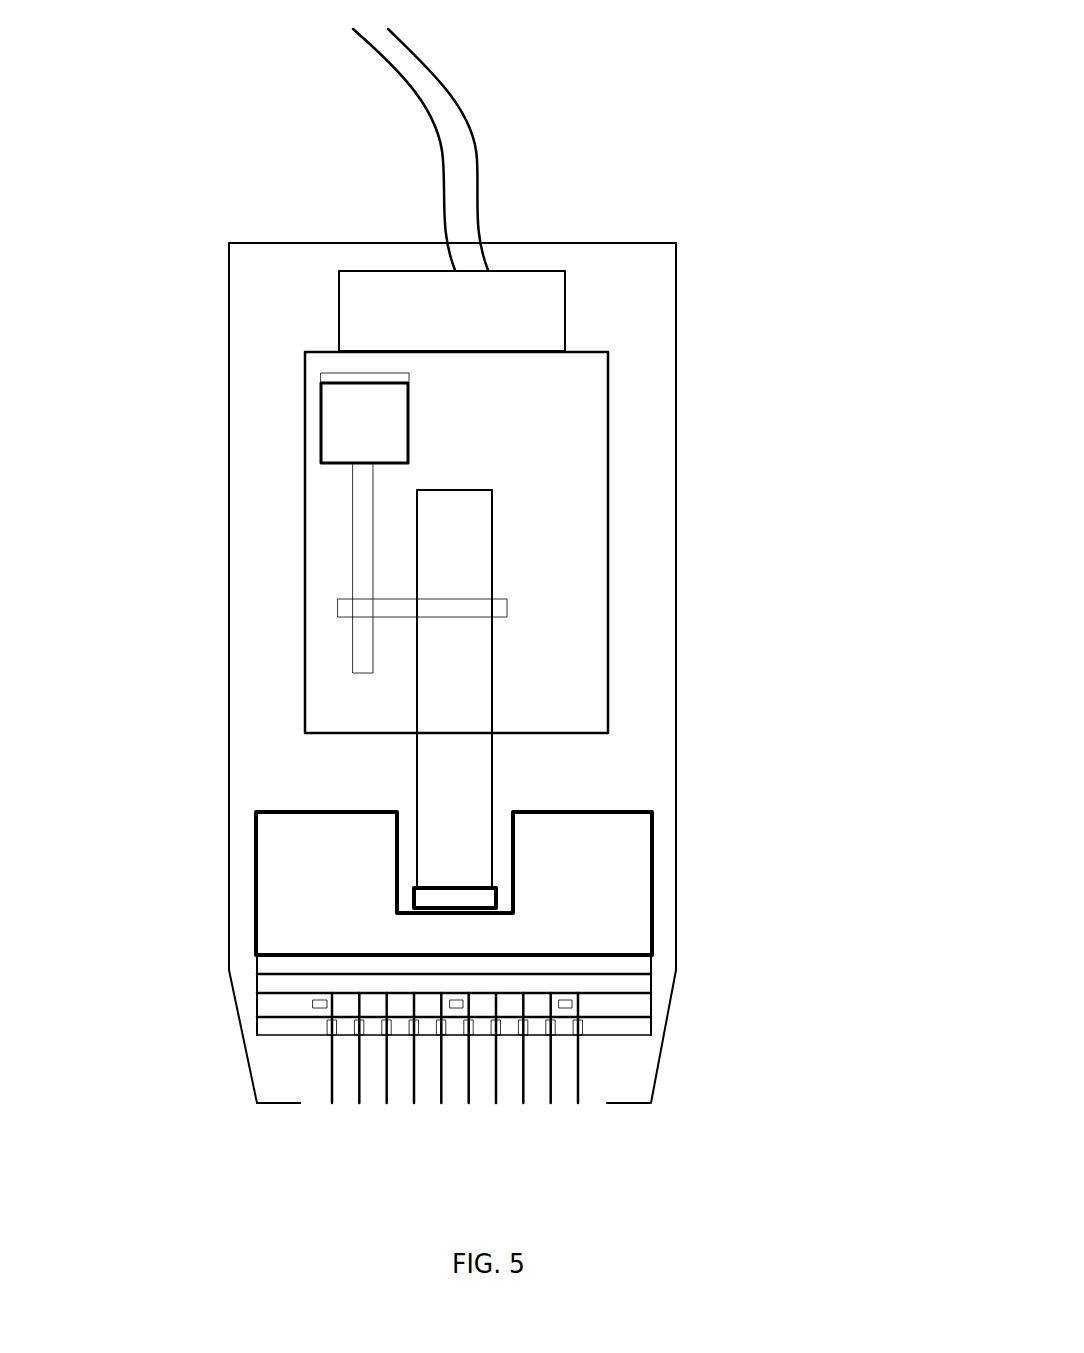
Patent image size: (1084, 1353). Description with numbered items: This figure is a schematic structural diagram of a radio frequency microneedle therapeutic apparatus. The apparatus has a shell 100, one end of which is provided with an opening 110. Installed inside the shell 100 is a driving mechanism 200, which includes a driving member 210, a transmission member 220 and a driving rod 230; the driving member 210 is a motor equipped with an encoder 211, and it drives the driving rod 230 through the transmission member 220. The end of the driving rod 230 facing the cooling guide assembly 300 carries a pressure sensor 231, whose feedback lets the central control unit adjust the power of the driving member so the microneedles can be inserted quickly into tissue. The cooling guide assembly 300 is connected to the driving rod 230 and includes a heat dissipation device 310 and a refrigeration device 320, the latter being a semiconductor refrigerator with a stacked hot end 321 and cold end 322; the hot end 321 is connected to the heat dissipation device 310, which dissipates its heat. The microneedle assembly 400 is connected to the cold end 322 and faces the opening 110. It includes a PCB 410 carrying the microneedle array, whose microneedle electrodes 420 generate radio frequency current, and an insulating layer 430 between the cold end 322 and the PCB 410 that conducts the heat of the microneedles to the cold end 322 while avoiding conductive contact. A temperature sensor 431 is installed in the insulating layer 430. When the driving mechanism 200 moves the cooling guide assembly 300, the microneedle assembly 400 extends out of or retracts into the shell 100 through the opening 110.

The shell 100 is at (676, 455).
The opening 110 is at (314, 1101).
The driving mechanism 200 is at (128, 425).
The driving member 210 is at (321, 427).
The encoder 211 is at (320, 376).
The transmission member 220 is at (353, 545).
The driving rod 230 is at (417, 678).
The pressure sensor 231 is at (413, 902).
The cooling guide assembly 300 is at (870, 850).
The heat dissipation device 310 is at (256, 842).
The refrigeration device 320 is at (805, 933).
The hot end 321 is at (640, 965).
The cold end 322 is at (640, 983).
The microneedle assembly 400 is at (135, 987).
The PCB 410 is at (267, 1022).
The microneedle electrode 420 is at (327, 1060).
The insulating layer 430 is at (280, 1002).
The temperature sensor 431 is at (572, 1003).